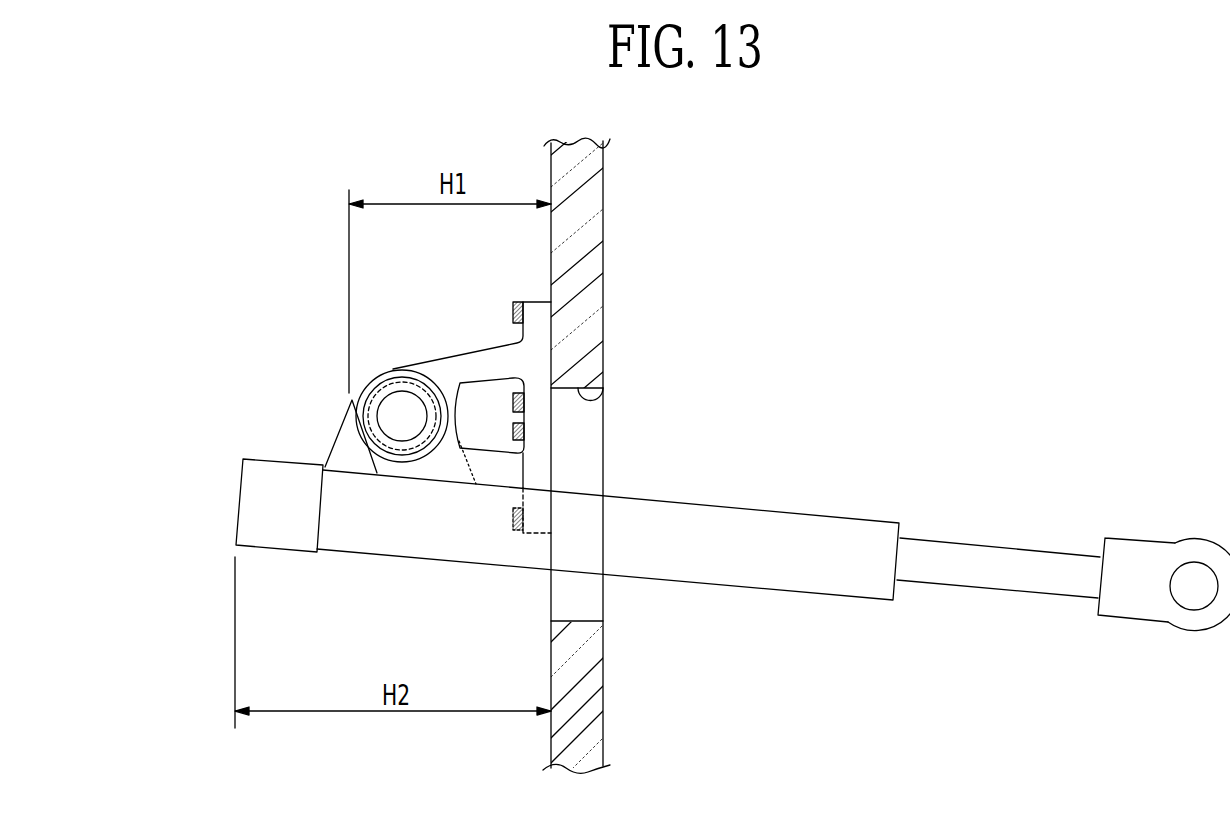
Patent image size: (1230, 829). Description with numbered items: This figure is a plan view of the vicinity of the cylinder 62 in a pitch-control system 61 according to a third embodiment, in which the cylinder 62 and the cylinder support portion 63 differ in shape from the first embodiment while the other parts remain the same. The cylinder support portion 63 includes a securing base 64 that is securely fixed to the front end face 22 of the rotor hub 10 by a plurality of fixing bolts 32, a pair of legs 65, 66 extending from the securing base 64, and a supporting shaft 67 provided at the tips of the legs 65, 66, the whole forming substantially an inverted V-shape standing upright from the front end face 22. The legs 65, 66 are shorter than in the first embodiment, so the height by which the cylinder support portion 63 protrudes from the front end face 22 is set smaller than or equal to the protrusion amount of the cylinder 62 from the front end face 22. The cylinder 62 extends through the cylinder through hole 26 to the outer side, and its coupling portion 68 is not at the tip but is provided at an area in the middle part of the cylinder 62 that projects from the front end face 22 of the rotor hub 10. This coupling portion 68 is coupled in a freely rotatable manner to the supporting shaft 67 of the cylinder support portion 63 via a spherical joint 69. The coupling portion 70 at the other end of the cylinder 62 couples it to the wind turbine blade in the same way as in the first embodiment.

The rotor hub 10 is at (474, 459).
The front end face 22 is at (551, 724).
The cylinder through hole 26 is at (613, 398).
The fixing bolts 32 is at (507, 310).
The pitch-control system 61 is at (460, 419).
The cylinder 62 is at (789, 510).
The cylinder support portion 63 is at (402, 436).
The securing base 64 is at (540, 427).
The leg 65 is at (498, 470).
The leg 66 is at (482, 350).
The supporting shaft 67 is at (403, 420).
The coupling portion 68 is at (336, 450).
The spherical joint 69 is at (368, 455).
The coupling portion 70 is at (1192, 538).